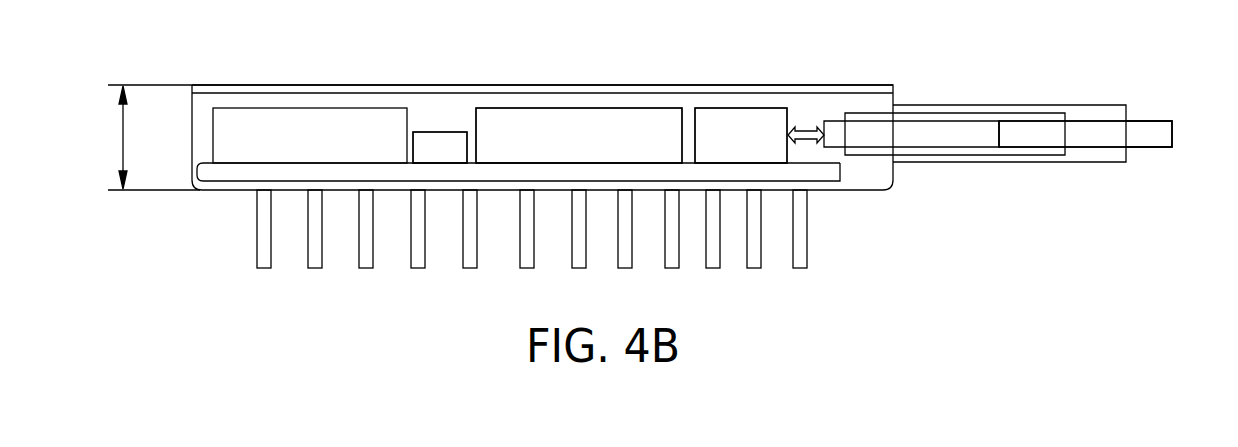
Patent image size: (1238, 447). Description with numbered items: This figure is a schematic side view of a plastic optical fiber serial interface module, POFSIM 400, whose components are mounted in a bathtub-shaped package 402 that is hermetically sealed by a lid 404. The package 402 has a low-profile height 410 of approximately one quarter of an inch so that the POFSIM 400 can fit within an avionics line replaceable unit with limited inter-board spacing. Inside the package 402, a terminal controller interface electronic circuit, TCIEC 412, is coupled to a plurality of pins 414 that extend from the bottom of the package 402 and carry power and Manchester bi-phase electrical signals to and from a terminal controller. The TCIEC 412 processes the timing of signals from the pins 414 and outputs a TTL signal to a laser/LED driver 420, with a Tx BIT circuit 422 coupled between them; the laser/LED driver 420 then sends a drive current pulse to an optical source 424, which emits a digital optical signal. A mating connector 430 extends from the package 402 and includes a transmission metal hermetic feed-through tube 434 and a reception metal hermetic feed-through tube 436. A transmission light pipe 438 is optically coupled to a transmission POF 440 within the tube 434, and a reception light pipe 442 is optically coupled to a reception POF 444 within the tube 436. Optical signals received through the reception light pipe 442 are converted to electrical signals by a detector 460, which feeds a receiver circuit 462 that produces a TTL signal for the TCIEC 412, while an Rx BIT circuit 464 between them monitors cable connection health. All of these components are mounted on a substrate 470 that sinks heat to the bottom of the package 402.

The POFSIM 400 is at (872, 72).
The package 402 is at (197, 186).
The lid 404 is at (227, 84).
The height 410 is at (122, 133).
The terminal controller interface electronic circuit (TCIEC) 412 is at (293, 107).
The pins 414 is at (257, 258).
The laser/LED driver 420 is at (527, 107).
The Tx BIT circuit 422 is at (421, 131).
The optical source 424 is at (712, 107).
The mating connector 430 is at (1091, 105).
The transmission metal hermetic feed-through tube 434 is at (947, 112).
The reception metal hermetic feed-through tube 436 is at (1022, 120).
The transmission light pipe 438 is at (947, 134).
The transmission plastic optical fiber (POF) 440 is at (1089, 134).
The reception light pipe 442 is at (876, 148).
The reception plastic optical fiber (POF) 444 is at (1157, 137).
The detector 460 is at (758, 107).
The receiver circuit 462 is at (582, 107).
The Rx BIT circuit 464 is at (448, 131).
The substrate 470 is at (207, 170).